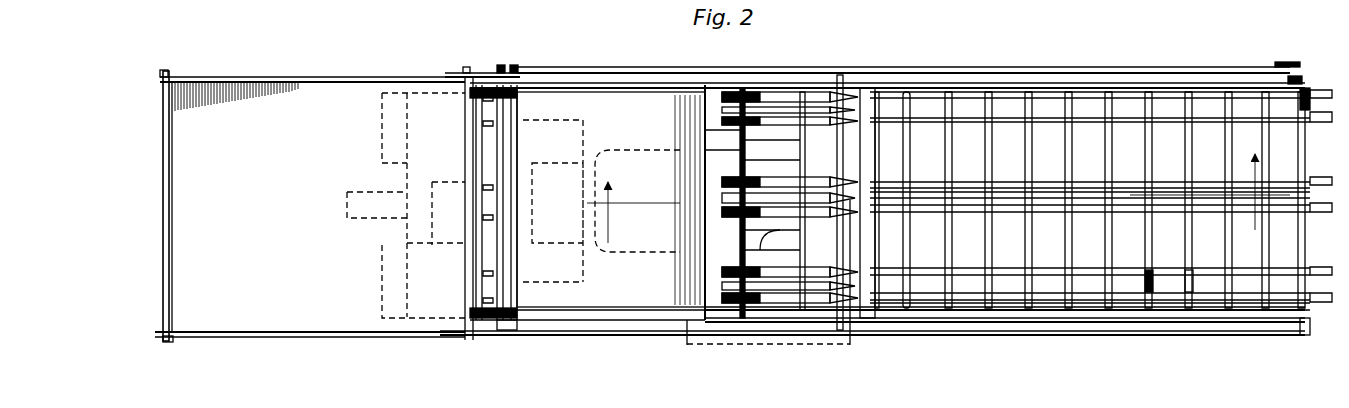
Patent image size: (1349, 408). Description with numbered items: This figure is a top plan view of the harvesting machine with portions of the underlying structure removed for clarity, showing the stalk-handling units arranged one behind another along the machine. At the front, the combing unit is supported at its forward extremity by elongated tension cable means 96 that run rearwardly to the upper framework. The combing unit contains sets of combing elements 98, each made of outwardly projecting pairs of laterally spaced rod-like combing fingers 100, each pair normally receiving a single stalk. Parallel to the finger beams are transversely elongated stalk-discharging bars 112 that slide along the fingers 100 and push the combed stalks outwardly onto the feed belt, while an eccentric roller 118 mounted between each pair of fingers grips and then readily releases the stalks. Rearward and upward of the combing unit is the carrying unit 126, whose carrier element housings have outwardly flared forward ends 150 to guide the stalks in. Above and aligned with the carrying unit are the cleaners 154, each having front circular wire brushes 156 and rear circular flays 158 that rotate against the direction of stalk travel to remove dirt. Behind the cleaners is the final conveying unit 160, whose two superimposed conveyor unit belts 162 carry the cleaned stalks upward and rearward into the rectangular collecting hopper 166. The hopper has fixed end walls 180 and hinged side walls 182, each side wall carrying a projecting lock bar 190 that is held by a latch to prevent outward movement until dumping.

The tension cable means 96 is at (963, 69).
The combing elements 98 is at (1313, 169).
The combing fingers 100 is at (1150, 283).
The stalk-discharging bar 112 is at (1300, 258).
The eccentric roller 118 is at (1305, 82).
The carrying unit 126 is at (781, 231).
The outwardly flared forward ends 150 is at (858, 263).
The cleaners 154 is at (717, 270).
The wire brushes 156 is at (746, 182).
The flays 158 is at (717, 185).
The final conveying unit 160 is at (589, 84).
The conveyor unit belts 162 is at (544, 102).
The collecting hopper 166 is at (261, 340).
The end walls 180 is at (163, 258).
The side walls 182 is at (312, 331).
The lock bar 190 is at (170, 343).